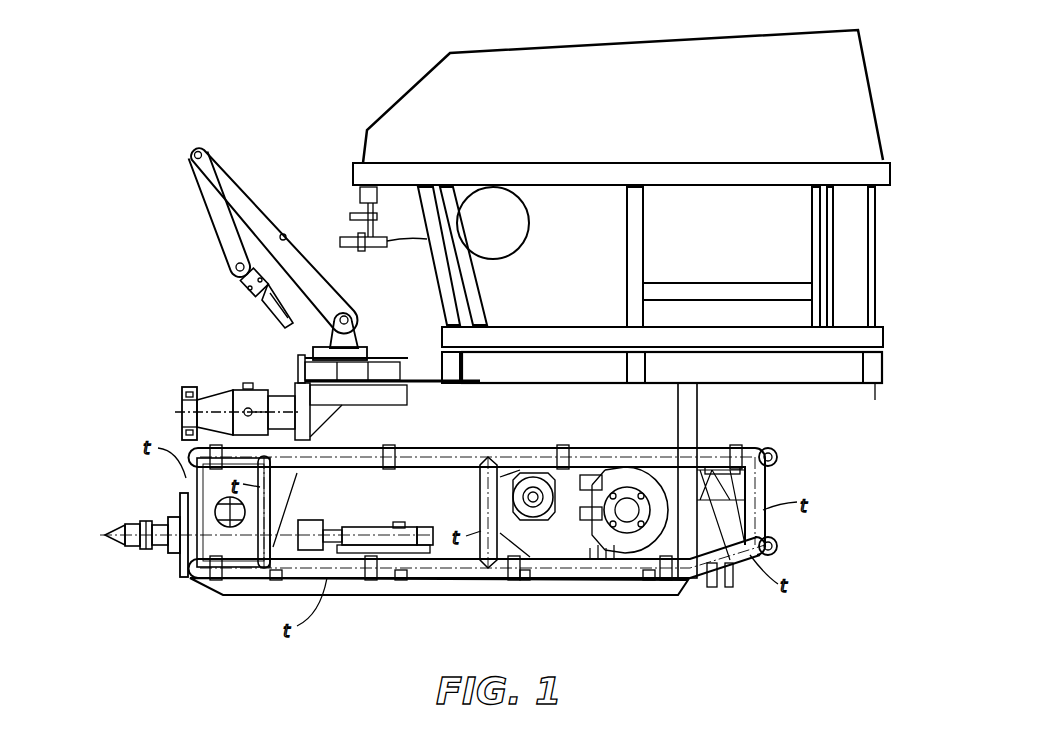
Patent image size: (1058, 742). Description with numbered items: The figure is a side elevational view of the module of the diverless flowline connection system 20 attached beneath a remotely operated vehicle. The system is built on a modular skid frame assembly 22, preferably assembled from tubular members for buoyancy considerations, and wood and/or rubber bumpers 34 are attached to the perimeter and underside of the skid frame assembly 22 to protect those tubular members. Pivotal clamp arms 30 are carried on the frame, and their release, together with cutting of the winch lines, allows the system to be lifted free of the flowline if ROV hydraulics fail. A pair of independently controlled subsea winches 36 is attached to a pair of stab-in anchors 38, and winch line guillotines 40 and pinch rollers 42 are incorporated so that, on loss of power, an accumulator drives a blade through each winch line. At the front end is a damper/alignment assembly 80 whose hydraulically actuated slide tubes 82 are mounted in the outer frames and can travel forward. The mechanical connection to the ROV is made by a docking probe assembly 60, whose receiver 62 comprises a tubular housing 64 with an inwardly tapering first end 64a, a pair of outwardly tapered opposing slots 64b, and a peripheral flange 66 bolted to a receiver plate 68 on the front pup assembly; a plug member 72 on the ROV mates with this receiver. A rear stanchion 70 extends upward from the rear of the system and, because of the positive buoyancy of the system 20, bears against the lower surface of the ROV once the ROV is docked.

The diverless flowline connection system 20 is at (127, 458).
The modular skid frame assembly 22 is at (178, 489).
The pivotal clamp arms 30 is at (233, 583).
The bumpers 34 is at (778, 457).
The winches 36 is at (633, 570).
The stab-in anchors 38 is at (137, 550).
The winch line guillotines 40 is at (398, 523).
The pinch rollers 42 is at (403, 522).
The docking probe assembly 60 is at (222, 372).
The receiver 62 is at (215, 388).
The tubular housing 64 is at (248, 383).
The inwardly tapering first end 64a is at (208, 388).
The opposing slots 64b is at (313, 430).
The peripheral flange 66 is at (182, 390).
The receiver plate 68 is at (182, 421).
The rear stanchion 70 is at (697, 428).
The plug member 72 is at (283, 397).
The damper/alignment assembly 80 is at (165, 552).
The slide tubes 82 is at (178, 555).